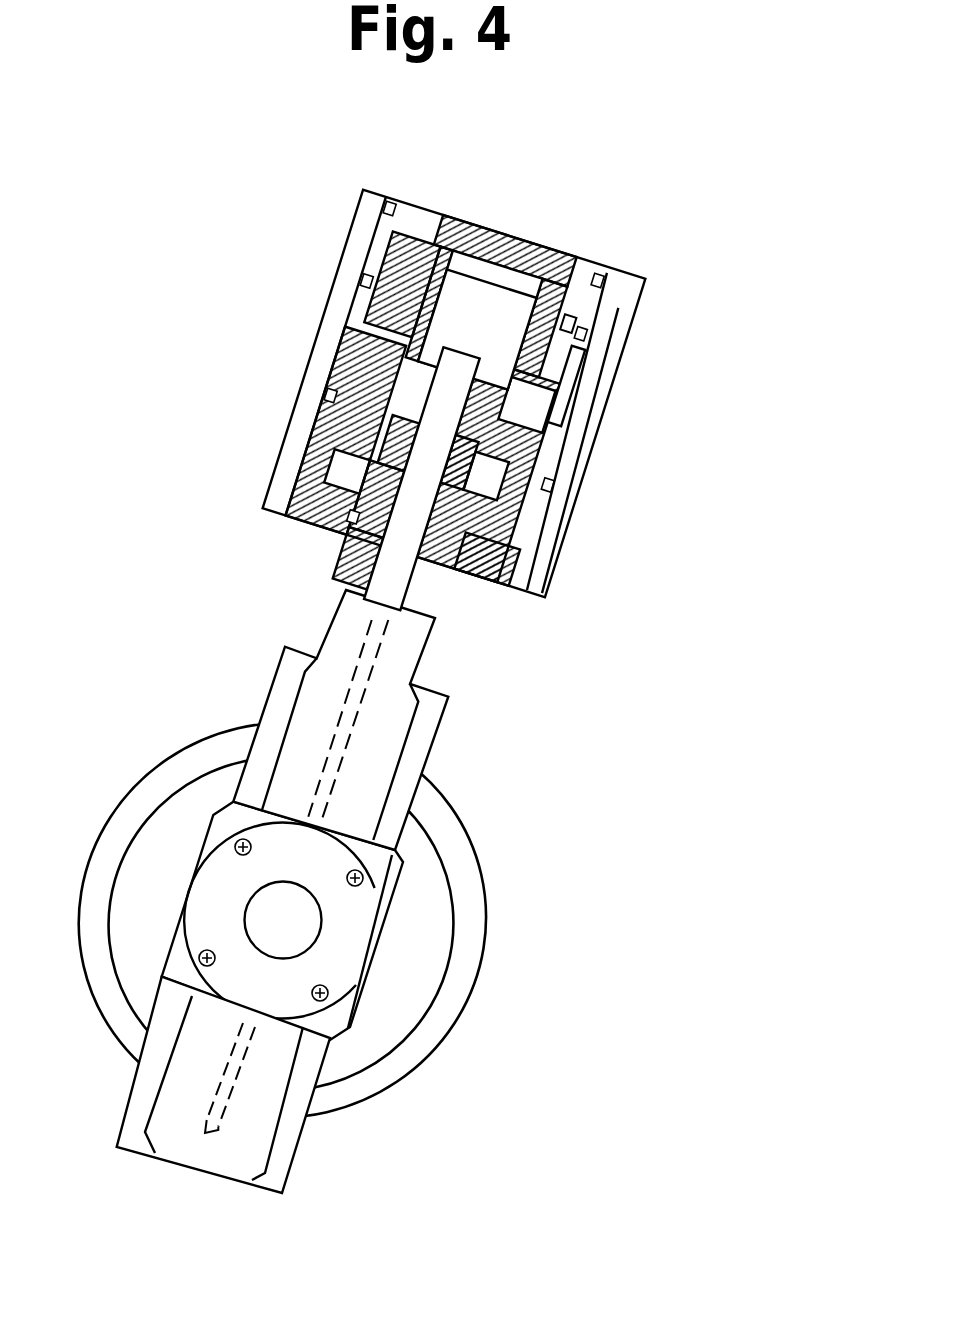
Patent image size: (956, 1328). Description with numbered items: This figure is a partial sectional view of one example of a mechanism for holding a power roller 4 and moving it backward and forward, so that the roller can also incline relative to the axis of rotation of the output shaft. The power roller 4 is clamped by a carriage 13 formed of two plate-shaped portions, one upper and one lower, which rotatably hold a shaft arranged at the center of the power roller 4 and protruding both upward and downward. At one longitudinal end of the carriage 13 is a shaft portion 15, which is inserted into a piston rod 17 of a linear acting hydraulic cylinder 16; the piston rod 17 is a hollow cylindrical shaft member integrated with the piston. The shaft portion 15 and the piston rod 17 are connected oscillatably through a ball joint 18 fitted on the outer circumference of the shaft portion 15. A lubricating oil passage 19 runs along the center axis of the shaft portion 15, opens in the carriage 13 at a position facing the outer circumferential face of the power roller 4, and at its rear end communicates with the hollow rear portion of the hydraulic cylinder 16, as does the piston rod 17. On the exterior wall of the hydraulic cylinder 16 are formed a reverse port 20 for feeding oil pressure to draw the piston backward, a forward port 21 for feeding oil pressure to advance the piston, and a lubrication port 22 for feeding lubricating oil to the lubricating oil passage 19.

The power roller 4 is at (478, 842).
The carriage 13 is at (135, 1121).
The shaft portion 15 is at (345, 562).
The hydraulic cylinder 16 is at (487, 228).
The piston rod 17 is at (498, 308).
The ball joint 18 is at (400, 434).
The lubricating oil passage 19 is at (400, 563).
The reverse port 20 is at (553, 547).
The forward port 21 is at (580, 390).
The lubrication port 22 is at (575, 325).